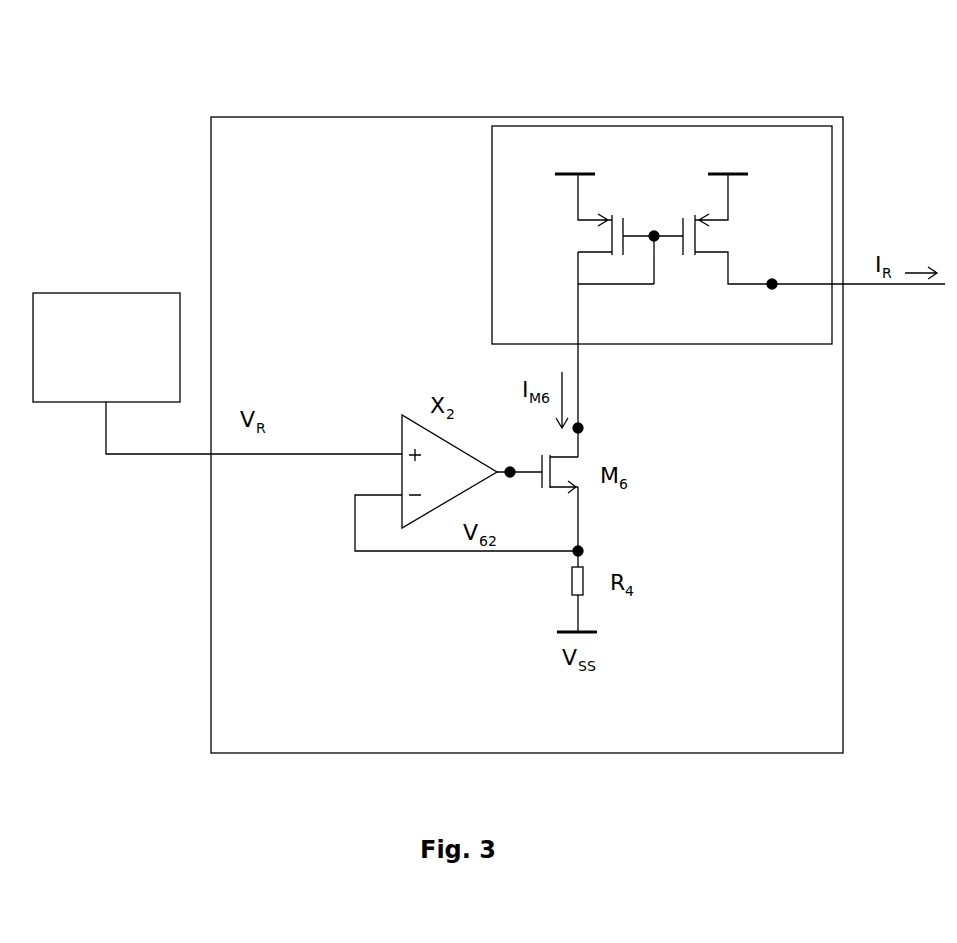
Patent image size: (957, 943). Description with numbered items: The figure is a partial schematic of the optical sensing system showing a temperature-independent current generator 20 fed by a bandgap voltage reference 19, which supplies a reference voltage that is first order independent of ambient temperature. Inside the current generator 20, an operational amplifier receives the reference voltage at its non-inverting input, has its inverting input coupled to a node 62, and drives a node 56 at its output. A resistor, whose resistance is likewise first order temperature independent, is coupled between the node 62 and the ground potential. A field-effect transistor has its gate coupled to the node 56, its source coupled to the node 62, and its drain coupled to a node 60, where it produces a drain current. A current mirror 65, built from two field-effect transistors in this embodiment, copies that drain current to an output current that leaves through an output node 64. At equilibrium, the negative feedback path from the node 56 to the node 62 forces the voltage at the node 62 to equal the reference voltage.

The current generator 20 is at (410, 117).
The bandgap voltage reference 19 is at (107, 293).
The node 56 is at (510, 472).
The node 60 is at (578, 428).
The node 62 is at (578, 551).
The output current node 64 is at (772, 284).
The current mirror 65 is at (675, 344).